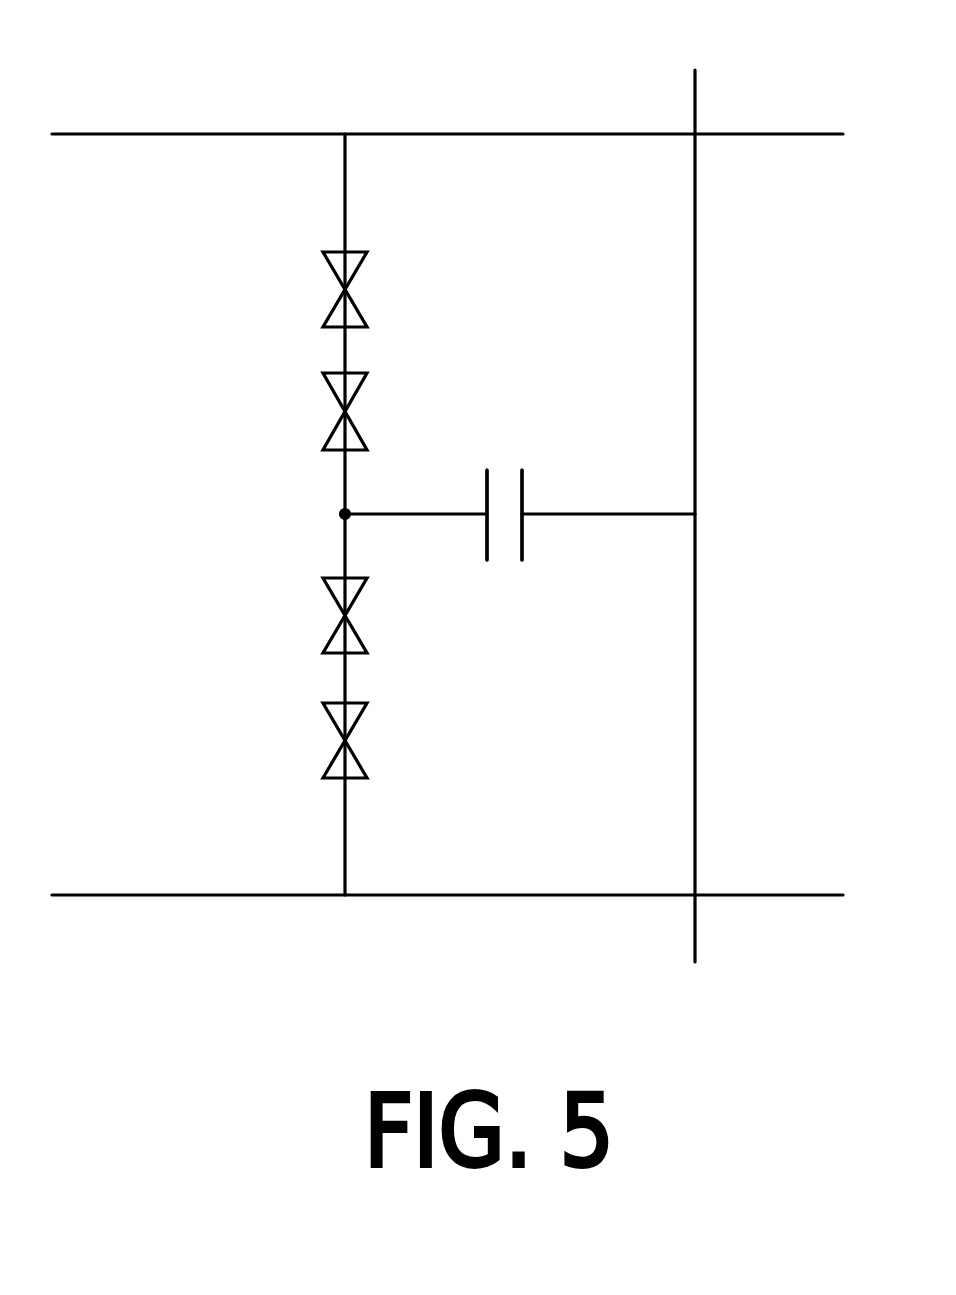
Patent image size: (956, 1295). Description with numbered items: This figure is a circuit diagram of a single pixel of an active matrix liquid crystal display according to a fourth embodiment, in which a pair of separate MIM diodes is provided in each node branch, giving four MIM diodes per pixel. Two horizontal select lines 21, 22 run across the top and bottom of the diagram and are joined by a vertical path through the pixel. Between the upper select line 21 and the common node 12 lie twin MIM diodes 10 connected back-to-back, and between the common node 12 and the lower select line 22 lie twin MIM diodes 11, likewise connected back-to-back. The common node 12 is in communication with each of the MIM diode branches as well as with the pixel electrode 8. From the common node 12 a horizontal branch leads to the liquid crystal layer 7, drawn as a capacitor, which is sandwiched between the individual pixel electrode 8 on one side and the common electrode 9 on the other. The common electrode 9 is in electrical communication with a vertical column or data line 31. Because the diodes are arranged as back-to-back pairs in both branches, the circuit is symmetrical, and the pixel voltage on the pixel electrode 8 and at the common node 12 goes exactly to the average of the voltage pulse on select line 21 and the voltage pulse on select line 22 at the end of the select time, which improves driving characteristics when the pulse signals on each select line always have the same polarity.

The liquid crystal layer 7 is at (502, 490).
The pixel electrode 8 is at (487, 540).
The common electrode 9 is at (522, 540).
The MIM diode 10 is at (337, 430).
The MIM diode 11 is at (337, 643).
The common node 12 is at (296, 536).
The select line 21 is at (303, 134).
The select line 22 is at (305, 895).
The column or data line 31 is at (695, 857).